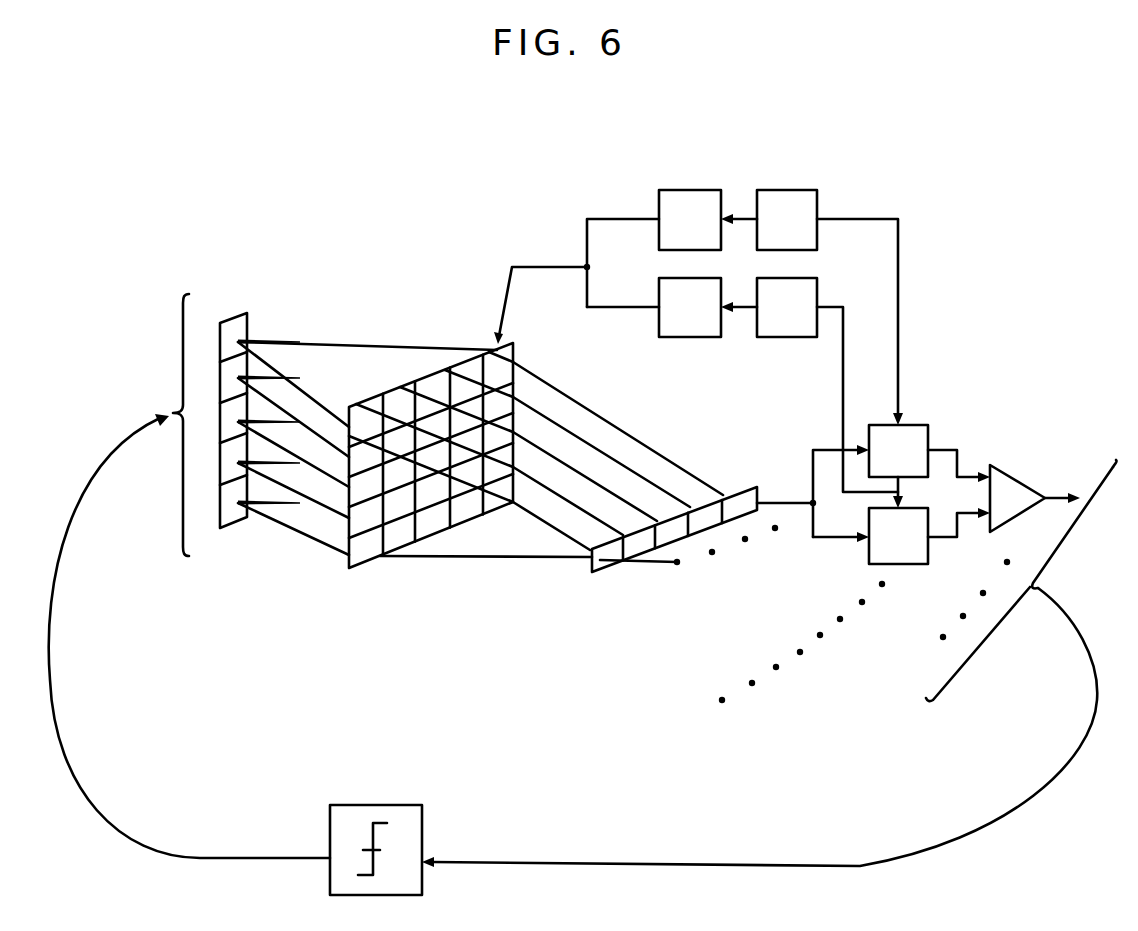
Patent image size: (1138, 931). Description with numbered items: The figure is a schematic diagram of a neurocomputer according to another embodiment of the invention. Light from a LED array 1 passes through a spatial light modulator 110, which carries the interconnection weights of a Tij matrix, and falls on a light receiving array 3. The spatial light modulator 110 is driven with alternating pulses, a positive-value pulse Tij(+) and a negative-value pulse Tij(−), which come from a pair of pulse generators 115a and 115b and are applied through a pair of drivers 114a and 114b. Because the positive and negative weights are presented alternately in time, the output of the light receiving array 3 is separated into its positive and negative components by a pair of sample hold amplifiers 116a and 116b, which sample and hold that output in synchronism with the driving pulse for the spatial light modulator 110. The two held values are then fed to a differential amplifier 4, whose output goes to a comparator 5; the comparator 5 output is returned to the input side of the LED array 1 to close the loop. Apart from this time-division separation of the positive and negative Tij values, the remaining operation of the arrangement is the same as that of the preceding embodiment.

The LED array 1 is at (245, 311).
The spatial light modulator 110 is at (518, 354).
The light receiving array 3 is at (748, 488).
The differential amplifier 4 is at (1025, 482).
The comparator 5 is at (385, 805).
The driver 114a is at (703, 188).
The driver 114b is at (703, 338).
The pulse generator 115a is at (807, 188).
The pulse generator 115b is at (800, 338).
The sample hold amplifier 116a is at (905, 424).
The sample hold amplifier 116b is at (910, 566).